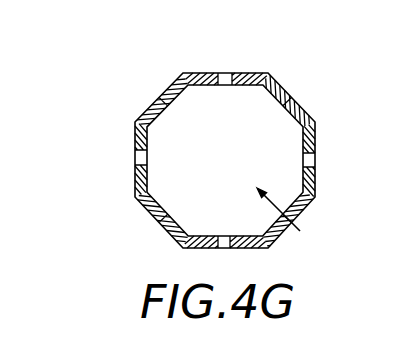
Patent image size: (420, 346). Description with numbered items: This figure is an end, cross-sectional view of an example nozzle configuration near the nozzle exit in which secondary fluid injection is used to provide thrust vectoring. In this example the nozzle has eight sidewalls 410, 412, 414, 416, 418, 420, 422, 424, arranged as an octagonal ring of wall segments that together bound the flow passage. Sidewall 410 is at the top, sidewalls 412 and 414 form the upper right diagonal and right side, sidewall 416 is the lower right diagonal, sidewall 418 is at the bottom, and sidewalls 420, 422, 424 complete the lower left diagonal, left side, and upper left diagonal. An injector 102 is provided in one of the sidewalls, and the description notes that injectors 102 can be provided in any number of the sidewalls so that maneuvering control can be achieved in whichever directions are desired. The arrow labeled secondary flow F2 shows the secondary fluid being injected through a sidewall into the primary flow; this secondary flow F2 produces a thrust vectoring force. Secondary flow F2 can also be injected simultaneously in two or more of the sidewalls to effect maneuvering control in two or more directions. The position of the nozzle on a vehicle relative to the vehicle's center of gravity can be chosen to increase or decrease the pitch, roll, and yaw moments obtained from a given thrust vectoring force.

The injector 102 is at (201, 151).
The sidewall 410 is at (206, 72).
The sidewall 412 is at (303, 111).
The sidewall 414 is at (316, 174).
The sidewall 416 is at (304, 209).
The sidewall 418 is at (246, 248).
The sidewall 420 is at (146, 206).
The sidewall 422 is at (136, 145).
The sidewall 424 is at (155, 103).
The secondary flow F2 is at (258, 190).